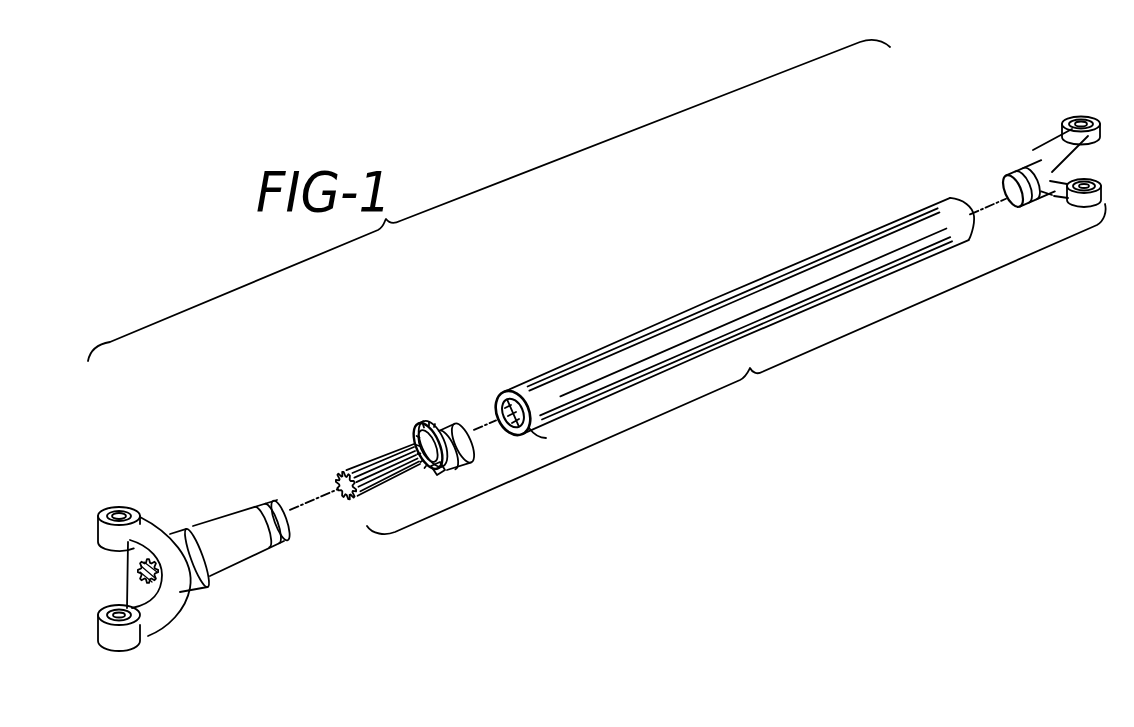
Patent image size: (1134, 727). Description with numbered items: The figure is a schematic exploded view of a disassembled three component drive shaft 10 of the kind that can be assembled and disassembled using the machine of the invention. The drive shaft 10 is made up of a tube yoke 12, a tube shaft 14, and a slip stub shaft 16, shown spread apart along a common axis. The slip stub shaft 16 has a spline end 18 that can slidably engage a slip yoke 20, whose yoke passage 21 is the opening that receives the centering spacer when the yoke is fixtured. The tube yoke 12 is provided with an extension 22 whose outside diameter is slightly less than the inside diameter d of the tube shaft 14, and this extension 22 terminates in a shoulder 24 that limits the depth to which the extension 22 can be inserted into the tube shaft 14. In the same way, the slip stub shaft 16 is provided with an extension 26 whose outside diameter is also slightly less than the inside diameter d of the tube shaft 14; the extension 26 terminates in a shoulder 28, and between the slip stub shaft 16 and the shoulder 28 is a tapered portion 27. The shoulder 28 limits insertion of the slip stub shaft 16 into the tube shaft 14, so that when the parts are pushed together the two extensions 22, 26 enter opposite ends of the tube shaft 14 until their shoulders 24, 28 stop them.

The drive shaft 10 is at (597, 287).
The tube yoke 12 is at (1050, 148).
The tube shaft 14 is at (733, 291).
The slip stub shaft 16 is at (400, 445).
The spline end 18 is at (360, 462).
The slip yoke 20 is at (229, 516).
The yoke passage 21 is at (119, 511).
The extension 22 is at (1044, 200).
The shoulder 24 is at (1024, 170).
The extension 26 is at (470, 450).
The tapered portion 27 is at (438, 474).
The shoulder 28 is at (431, 423).
The inside diameter d is at (547, 442).